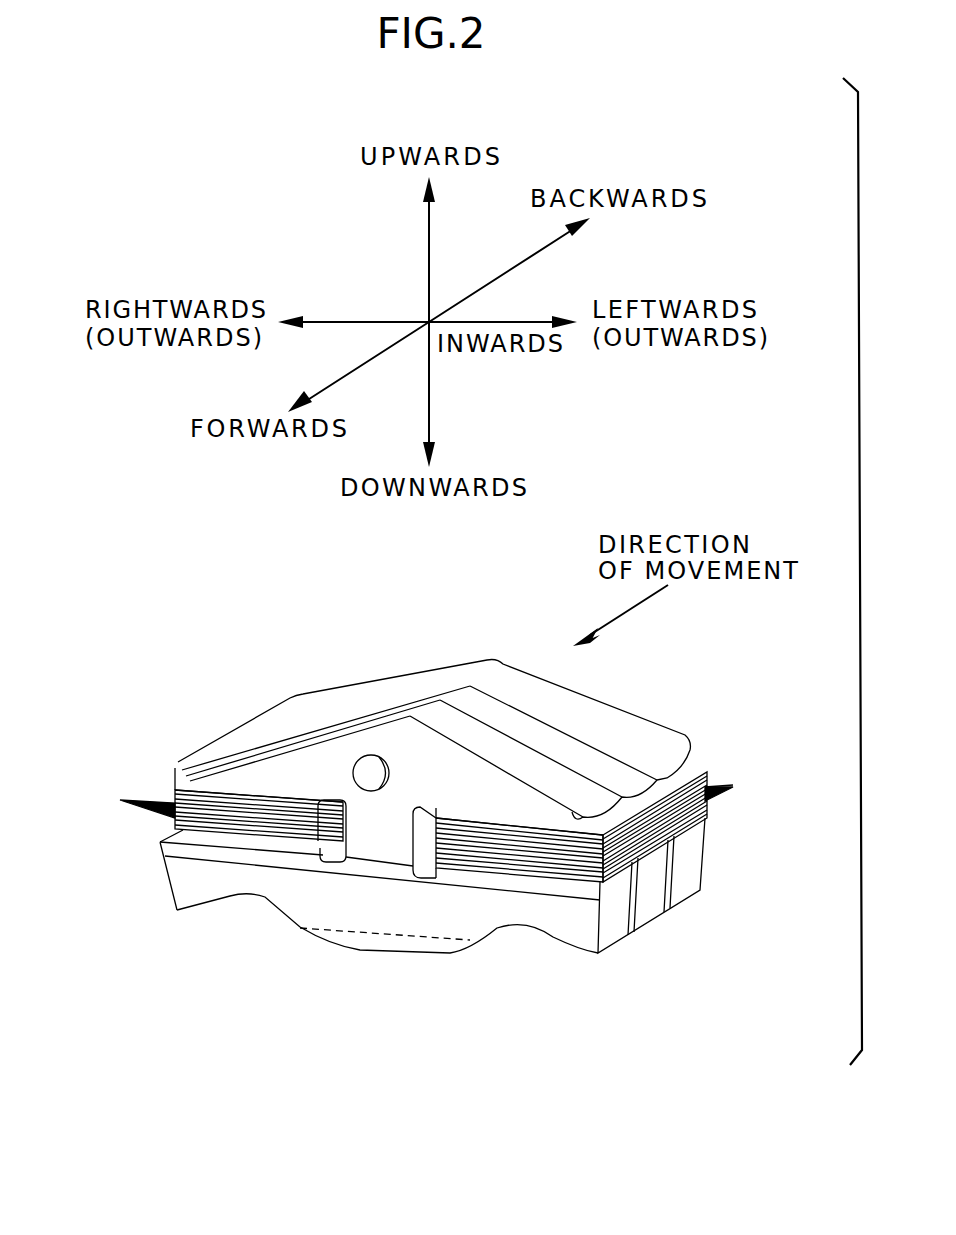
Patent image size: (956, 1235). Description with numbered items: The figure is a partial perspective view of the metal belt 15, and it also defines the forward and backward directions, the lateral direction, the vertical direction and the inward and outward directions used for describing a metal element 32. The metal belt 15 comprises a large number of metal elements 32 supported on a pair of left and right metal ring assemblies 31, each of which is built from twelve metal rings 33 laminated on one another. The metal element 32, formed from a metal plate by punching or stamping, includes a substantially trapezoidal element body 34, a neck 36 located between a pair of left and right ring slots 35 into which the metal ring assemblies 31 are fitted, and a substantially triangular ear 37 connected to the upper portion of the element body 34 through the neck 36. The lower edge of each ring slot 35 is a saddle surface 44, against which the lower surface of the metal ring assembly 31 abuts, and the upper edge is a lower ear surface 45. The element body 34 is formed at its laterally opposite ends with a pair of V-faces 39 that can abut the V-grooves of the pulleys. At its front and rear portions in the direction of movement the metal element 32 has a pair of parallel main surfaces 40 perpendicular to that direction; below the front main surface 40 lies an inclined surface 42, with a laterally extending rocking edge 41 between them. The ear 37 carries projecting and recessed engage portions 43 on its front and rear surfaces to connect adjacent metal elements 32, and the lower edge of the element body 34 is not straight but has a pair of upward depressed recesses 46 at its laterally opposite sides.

The metal belt 15 is at (441, 652).
The metal ring assembly 31 is at (673, 783).
The metal element 32 is at (420, 966).
The metal ring 33 is at (426, 796).
The element body 34 is at (193, 893).
The ring slot 35 is at (323, 848).
The neck 36 is at (387, 860).
The ear 37 is at (258, 775).
The V-face 39 is at (613, 920).
The main surface 40 is at (392, 837).
The rocking edge 41 is at (300, 871).
The inclined surface 42 is at (389, 917).
The engage portion 43 is at (368, 773).
The saddle surface 44 is at (183, 830).
The lower ear surface 45 is at (273, 823).
The recess 46 is at (233, 897).